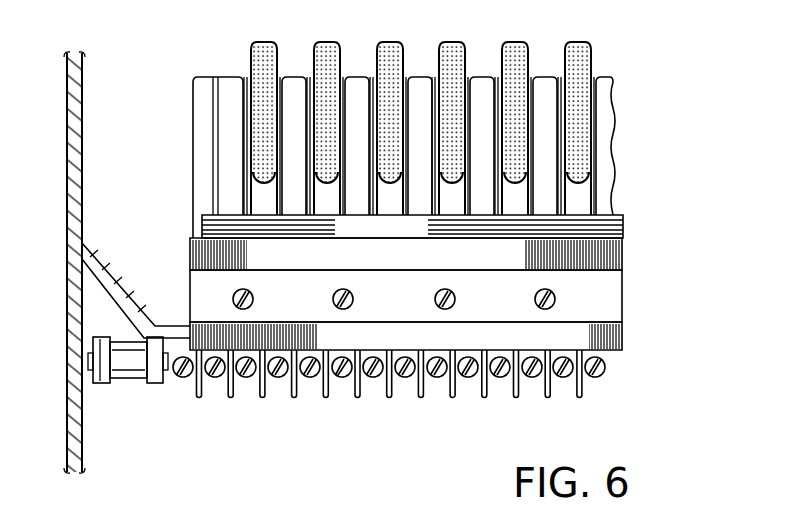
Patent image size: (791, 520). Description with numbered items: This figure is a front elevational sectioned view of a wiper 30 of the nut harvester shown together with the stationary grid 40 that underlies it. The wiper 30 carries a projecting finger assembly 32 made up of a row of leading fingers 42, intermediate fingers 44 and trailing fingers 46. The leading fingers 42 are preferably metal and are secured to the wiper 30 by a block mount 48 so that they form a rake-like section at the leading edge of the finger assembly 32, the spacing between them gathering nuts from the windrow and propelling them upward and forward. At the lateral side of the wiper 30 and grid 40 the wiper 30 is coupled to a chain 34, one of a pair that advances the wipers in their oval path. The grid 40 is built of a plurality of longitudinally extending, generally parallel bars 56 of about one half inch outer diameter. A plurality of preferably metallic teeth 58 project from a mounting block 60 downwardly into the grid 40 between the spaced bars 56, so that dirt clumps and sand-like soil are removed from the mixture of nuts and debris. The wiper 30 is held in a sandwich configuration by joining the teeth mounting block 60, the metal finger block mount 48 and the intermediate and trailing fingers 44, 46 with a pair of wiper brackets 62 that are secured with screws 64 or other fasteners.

The wiper 30 is at (437, 228).
The finger assembly 32 is at (178, 132).
The chain 34 is at (132, 383).
The stationary grid 40 is at (438, 400).
The leading fingers 42 is at (213, 183).
The intermediate fingers 44 is at (193, 82).
The trailing fingers 46 is at (253, 45).
The block mount 48 is at (605, 222).
The bars 56 is at (252, 398).
The teeth 58 is at (357, 398).
The mounting block 60 is at (622, 258).
The wiper brackets 62 is at (435, 310).
The screws 64 is at (435, 300).